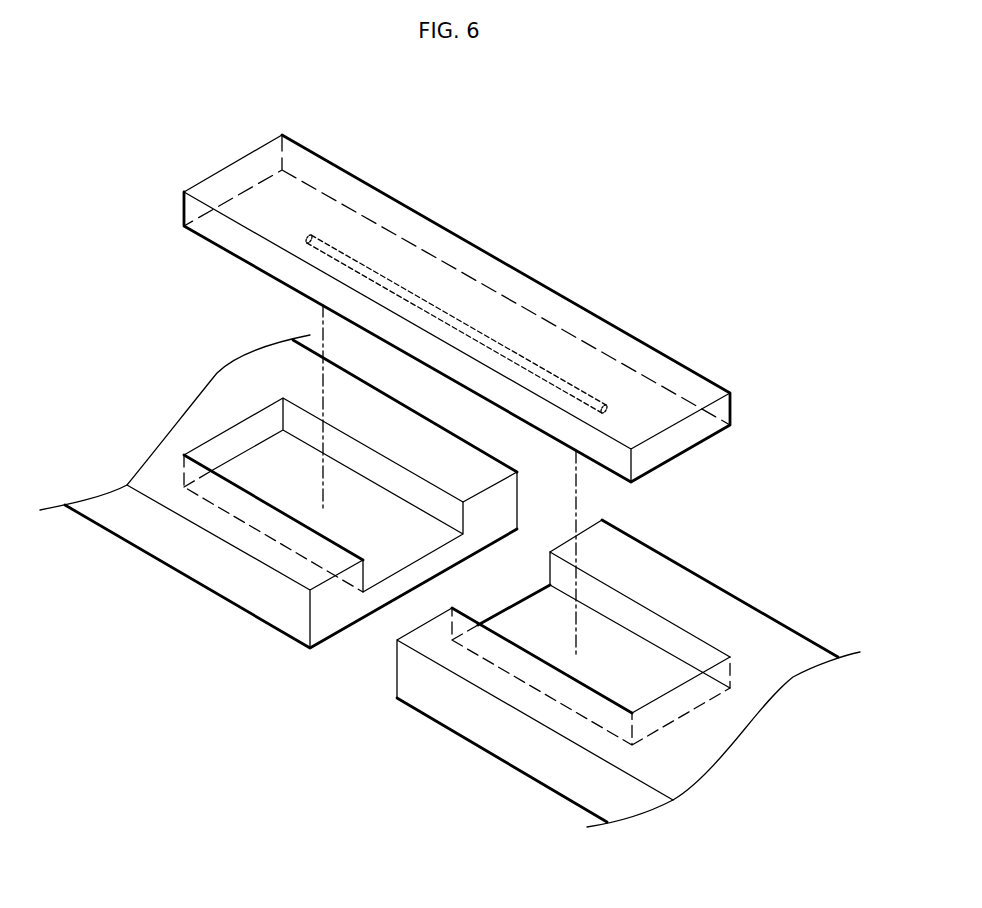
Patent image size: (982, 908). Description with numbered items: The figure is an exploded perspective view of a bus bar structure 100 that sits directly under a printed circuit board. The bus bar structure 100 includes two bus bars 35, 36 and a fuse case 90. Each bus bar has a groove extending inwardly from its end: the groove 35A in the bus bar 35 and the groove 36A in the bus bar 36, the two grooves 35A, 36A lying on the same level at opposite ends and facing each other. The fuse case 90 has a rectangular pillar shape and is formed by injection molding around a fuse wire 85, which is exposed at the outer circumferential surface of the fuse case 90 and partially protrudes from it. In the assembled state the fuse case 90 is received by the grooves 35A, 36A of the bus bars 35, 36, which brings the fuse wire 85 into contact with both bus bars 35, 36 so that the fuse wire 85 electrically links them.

The bus bar structure 100 is at (182, 97).
The fuse case 90 is at (598, 312).
The fuse wire 85 is at (408, 300).
The bus bar 36 is at (163, 538).
The groove 36A is at (290, 494).
The bus bar 35 is at (585, 781).
The groove 35A is at (547, 643).